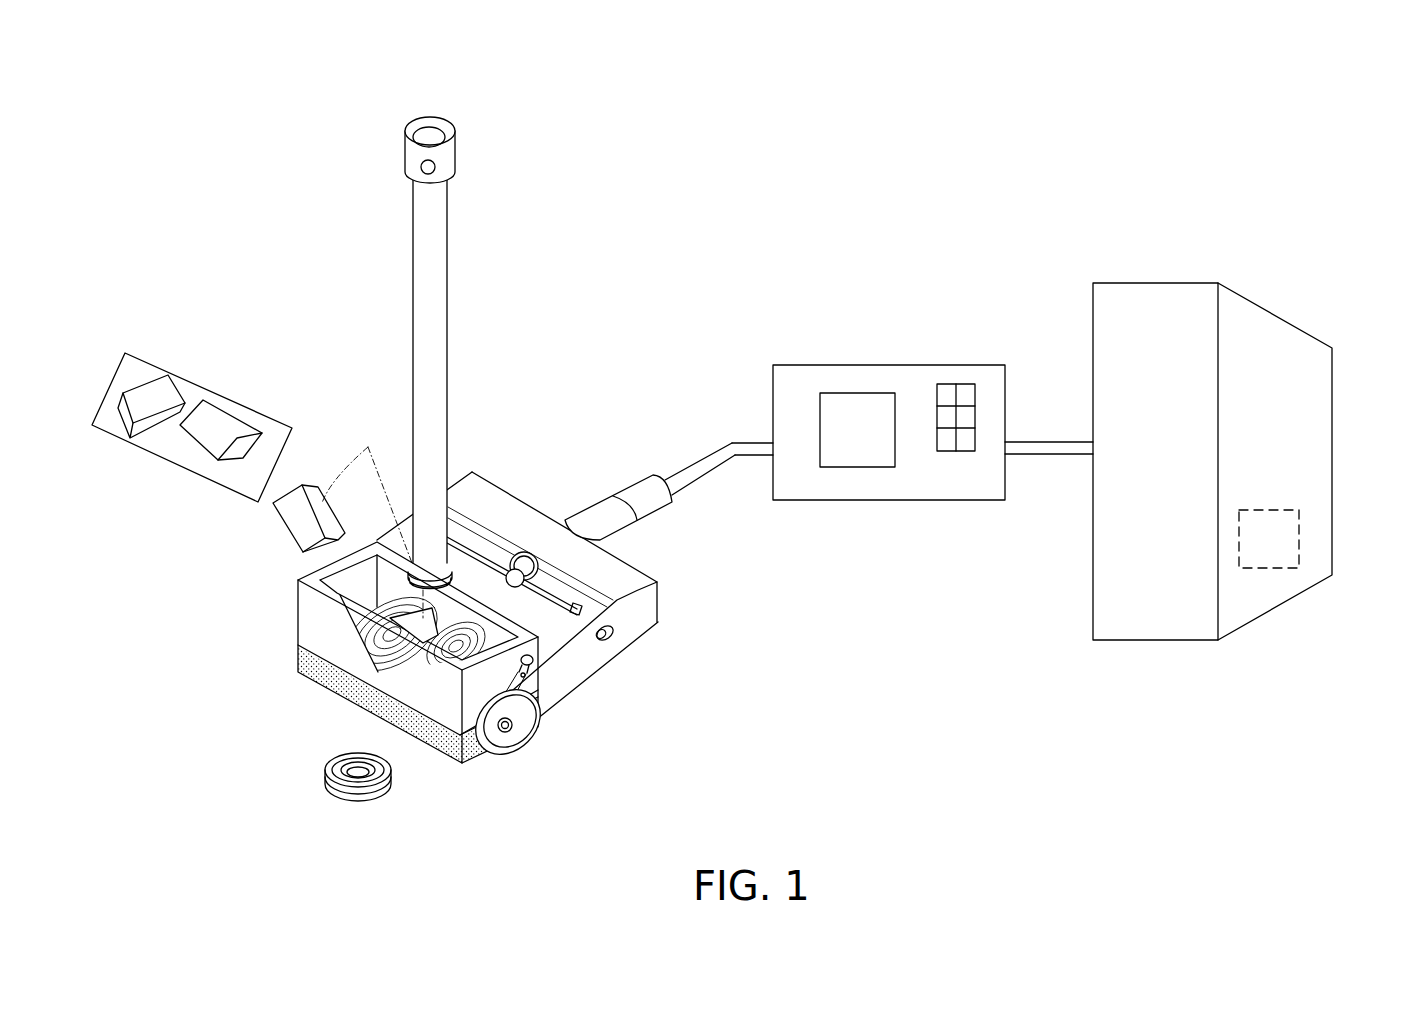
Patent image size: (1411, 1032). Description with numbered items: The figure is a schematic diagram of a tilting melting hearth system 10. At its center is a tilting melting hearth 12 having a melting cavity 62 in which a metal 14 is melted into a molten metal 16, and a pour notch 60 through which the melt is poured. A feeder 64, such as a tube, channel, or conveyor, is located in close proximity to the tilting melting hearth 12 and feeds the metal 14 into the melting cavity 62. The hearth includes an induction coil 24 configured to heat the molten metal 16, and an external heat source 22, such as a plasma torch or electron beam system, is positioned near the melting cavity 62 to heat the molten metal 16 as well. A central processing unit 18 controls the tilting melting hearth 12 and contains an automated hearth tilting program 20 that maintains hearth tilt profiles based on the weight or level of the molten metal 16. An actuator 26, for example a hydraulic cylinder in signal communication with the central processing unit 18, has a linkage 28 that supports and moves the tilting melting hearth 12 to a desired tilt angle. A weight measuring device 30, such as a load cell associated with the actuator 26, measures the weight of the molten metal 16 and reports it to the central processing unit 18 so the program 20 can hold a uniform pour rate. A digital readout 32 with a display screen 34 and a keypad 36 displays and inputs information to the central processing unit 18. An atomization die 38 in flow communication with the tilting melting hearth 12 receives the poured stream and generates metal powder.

The tilting melting hearth system 10 is at (1222, 107).
The tilting melting hearth 12 is at (457, 768).
The metal 14 is at (215, 403).
The molten metal 16 is at (532, 670).
The central processing unit (CPU) 18 is at (1252, 623).
The automated hearth tilting program 20 is at (1300, 540).
The external heat source 22 is at (448, 263).
The induction coil 24 is at (482, 752).
The actuator 26 is at (590, 510).
The linkage 28 is at (577, 663).
The weight measuring device 30 is at (637, 478).
The digital readout 32 is at (888, 503).
The display screen 34 is at (843, 407).
The keypad 36 is at (947, 380).
The atomization die 38 is at (320, 777).
The pour notch 60 is at (360, 634).
The melting cavity 62 is at (400, 662).
The feeder 64 is at (118, 385).